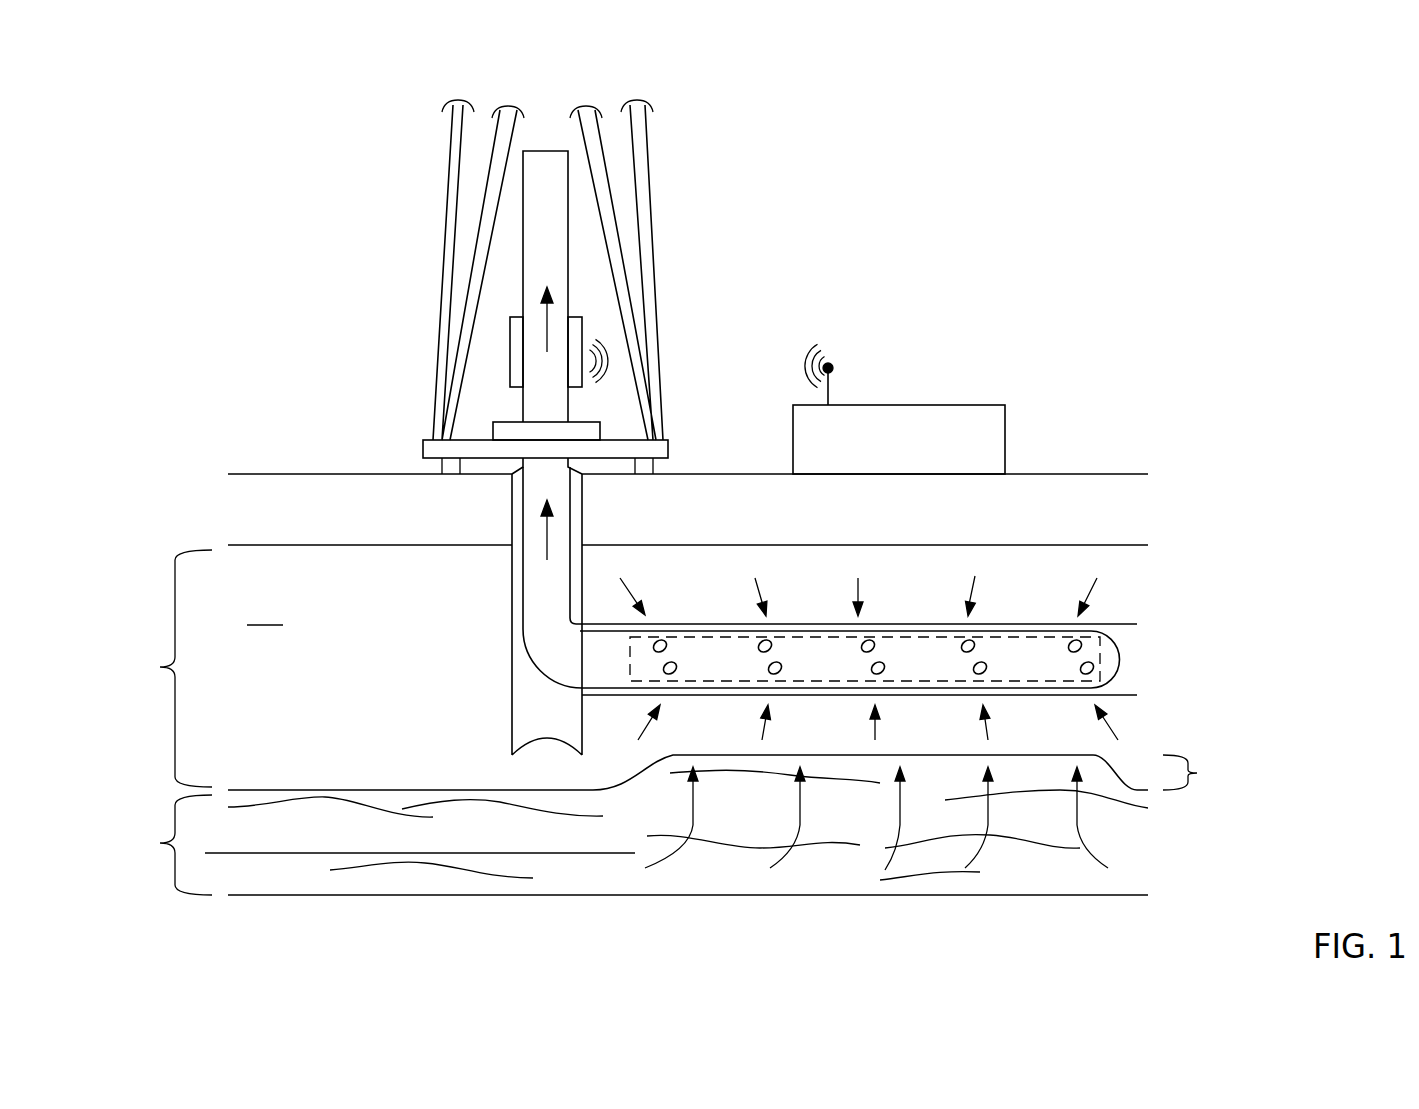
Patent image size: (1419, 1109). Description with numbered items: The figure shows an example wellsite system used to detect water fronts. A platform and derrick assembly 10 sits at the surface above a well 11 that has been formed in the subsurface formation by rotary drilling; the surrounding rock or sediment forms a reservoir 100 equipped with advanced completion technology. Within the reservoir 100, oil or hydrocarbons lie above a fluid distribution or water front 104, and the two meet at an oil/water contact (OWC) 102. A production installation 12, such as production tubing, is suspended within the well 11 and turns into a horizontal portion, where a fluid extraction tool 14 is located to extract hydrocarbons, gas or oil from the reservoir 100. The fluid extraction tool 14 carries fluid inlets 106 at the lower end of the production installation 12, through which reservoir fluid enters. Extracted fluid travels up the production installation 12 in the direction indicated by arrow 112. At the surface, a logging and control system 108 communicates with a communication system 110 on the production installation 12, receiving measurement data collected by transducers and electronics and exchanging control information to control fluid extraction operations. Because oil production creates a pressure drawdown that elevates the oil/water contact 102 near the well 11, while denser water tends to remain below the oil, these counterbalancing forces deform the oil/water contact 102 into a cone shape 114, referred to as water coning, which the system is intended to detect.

The platform and derrick assembly 10 is at (690, 148).
The well 11 is at (589, 466).
The production installation 12 is at (542, 593).
The fluid extraction tool 14 is at (630, 672).
The reservoir 100 is at (160, 667).
The oil/water contact (OWC) 102 is at (500, 780).
The fluid distribution or water front 104 is at (160, 843).
The fluid inlets 106 is at (1085, 647).
The logging and control system 108 is at (982, 405).
The communication system 110 is at (508, 352).
The arrow 112 is at (545, 315).
The cone shape 114 is at (1197, 773).